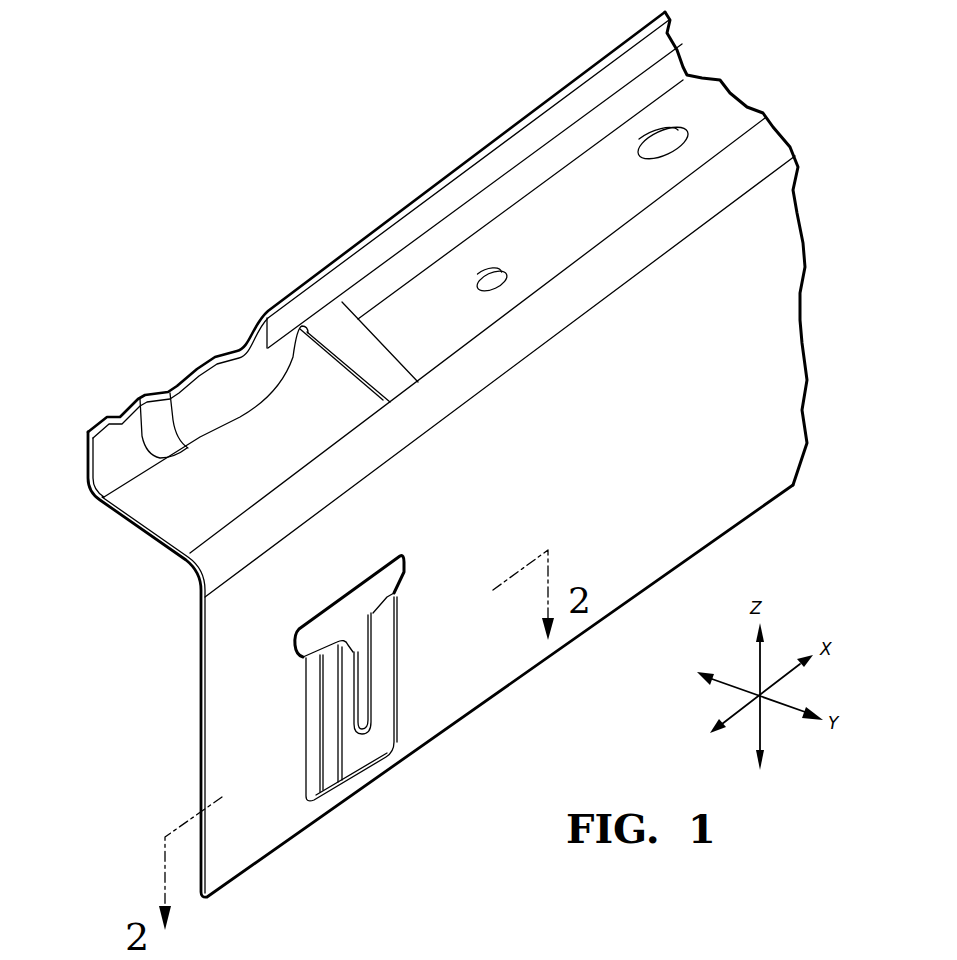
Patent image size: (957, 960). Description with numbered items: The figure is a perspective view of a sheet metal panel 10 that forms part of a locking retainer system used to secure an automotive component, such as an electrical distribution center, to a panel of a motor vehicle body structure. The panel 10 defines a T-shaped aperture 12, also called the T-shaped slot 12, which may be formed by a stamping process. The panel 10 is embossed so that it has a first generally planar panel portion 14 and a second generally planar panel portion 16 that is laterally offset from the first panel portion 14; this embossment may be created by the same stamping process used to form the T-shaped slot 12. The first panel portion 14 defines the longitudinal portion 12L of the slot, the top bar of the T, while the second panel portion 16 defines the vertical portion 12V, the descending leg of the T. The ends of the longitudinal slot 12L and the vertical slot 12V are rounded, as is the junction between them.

The panel 10 is at (430, 454).
The T-shaped aperture 12 is at (313, 531).
The longitudinal portion 12L is at (345, 603).
The vertical portion 12V is at (373, 715).
The first generally planar panel portion 14 is at (270, 612).
The second generally planar panel portion 16 is at (350, 762).